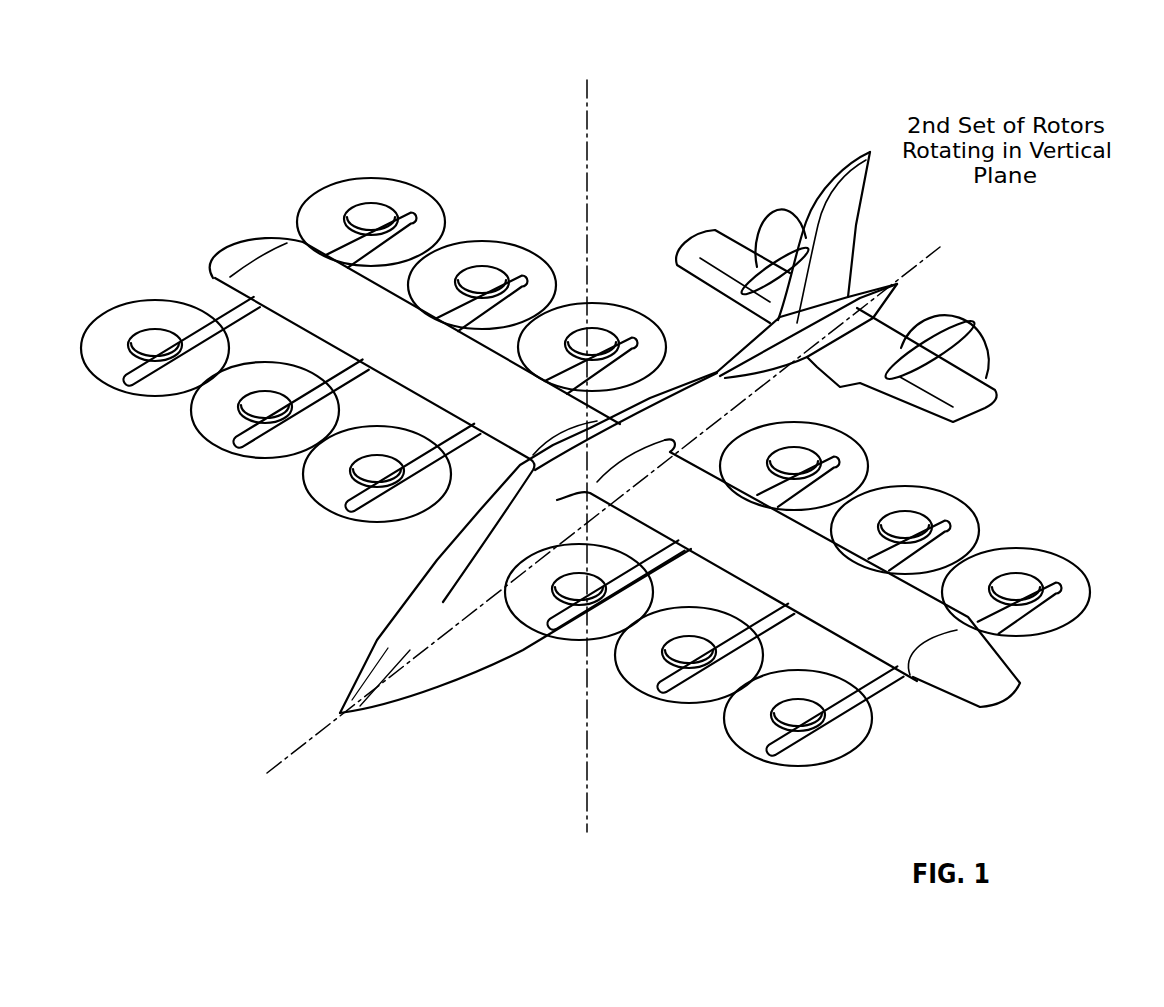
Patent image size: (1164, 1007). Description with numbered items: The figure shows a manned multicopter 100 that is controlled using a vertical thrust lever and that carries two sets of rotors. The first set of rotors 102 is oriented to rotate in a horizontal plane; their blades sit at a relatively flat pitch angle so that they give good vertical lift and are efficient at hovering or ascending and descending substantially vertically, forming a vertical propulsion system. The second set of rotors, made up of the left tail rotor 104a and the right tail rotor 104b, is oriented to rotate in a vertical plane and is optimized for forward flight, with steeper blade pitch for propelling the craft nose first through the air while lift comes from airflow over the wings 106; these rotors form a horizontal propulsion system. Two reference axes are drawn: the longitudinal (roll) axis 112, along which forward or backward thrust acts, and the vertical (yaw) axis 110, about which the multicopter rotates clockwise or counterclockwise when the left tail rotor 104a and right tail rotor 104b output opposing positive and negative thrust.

The aircraft 100 is at (1024, 72).
The first set of rotors 102 is at (347, 180).
The left tail rotor 104a is at (946, 306).
The right tail rotor 104b is at (770, 207).
The wings 106 is at (218, 257).
The vertical axis 110 is at (587, 792).
The longitudinal axis 112 is at (297, 750).